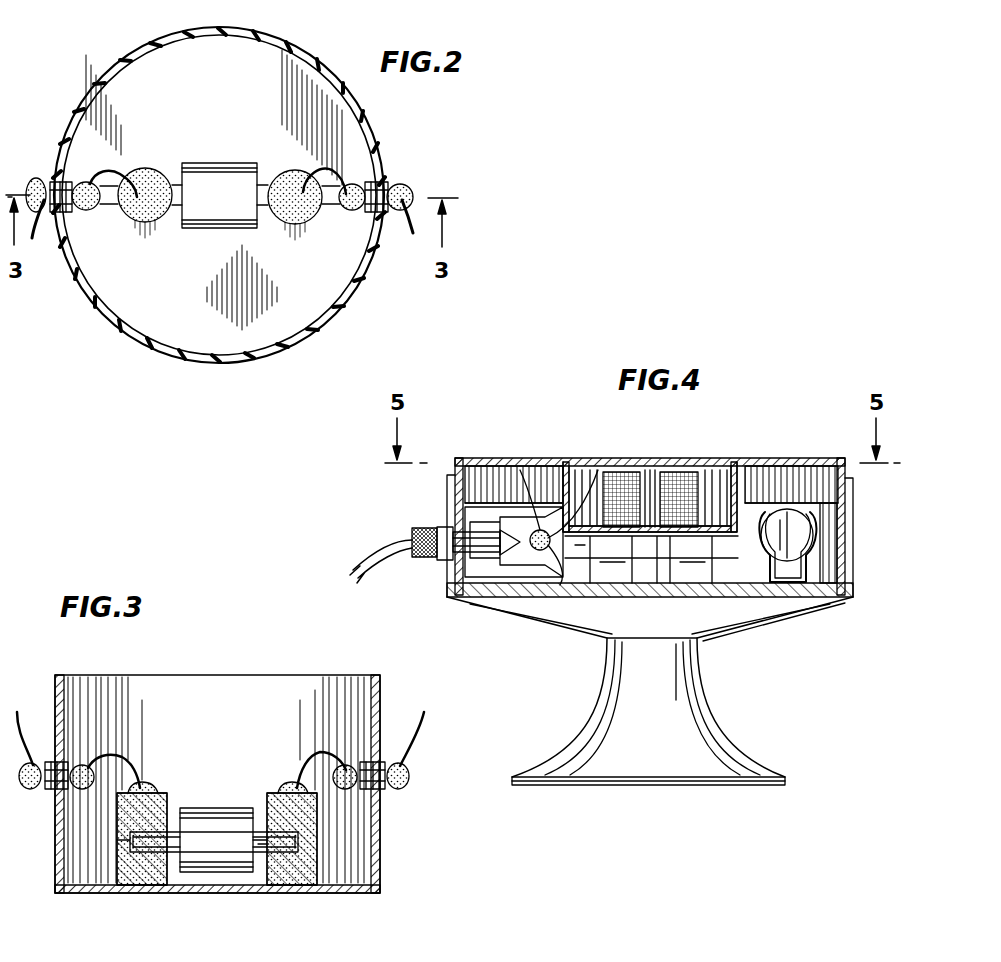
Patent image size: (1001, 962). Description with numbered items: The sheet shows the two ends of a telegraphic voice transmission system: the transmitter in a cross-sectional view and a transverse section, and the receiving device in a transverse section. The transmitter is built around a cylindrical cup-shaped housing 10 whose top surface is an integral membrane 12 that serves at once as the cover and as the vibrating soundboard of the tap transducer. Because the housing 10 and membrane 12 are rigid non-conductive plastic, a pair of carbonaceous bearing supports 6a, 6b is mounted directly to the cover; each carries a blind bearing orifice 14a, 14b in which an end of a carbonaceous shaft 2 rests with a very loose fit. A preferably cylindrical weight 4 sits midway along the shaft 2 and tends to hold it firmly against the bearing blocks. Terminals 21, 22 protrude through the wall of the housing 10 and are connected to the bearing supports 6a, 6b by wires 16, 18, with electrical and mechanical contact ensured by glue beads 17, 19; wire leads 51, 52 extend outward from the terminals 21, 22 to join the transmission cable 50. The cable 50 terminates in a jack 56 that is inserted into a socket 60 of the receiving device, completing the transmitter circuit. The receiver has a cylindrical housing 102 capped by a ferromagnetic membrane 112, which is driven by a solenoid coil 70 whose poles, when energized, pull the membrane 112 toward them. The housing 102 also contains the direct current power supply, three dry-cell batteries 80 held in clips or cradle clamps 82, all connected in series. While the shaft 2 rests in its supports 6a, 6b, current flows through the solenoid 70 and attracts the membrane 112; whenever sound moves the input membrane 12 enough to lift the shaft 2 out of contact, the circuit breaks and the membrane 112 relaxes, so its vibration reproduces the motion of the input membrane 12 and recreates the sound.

In FIG. 2, the shaft 2 is at (263, 186).
In FIG. 3, the shaft 2 is at (174, 830).
In FIG. 2, the weight 4 is at (214, 172).
In FIG. 3, the weight 4 is at (213, 822).
In FIG. 2, the bearing support 6a is at (302, 177).
In FIG. 3, the bearing support 6a is at (317, 810).
In FIG. 2, the bearing support 6b is at (153, 174).
In FIG. 3, the bearing support 6b is at (117, 827).
In FIG. 2, the housing 10 is at (326, 318).
In FIG. 3, the housing 10 is at (380, 686).
In FIG. 2, the membrane 12 is at (181, 306).
In FIG. 3, the membrane 12 is at (370, 884).
In FIG. 3, the blind bearing orifice 14a is at (266, 842).
In FIG. 3, the blind bearing orifice 14b is at (132, 846).
In FIG. 2, the wire 16 is at (328, 180).
In FIG. 3, the wire 16 is at (331, 757).
In FIG. 3, the glue bead 17 is at (284, 782).
In FIG. 2, the wire 18 is at (110, 180).
In FIG. 3, the wire 18 is at (116, 757).
In FIG. 3, the glue bead 19 is at (172, 833).
In FIG. 2, the terminal 21 is at (387, 183).
In FIG. 3, the terminal 21 is at (385, 786).
In FIG. 2, the terminal 22 is at (50, 182).
In FIG. 3, the terminal 22 is at (33, 762).
In FIG. 4, the transmission cable 50 is at (404, 562).
In FIG. 2, the first external lead 51 is at (408, 232).
In FIG. 3, the first external lead 51 is at (427, 717).
In FIG. 2, the second external lead 52 is at (35, 244).
In FIG. 3, the second external lead 52 is at (17, 712).
In FIG. 4, the jack 56 is at (460, 534).
In FIG. 4, the socket 60 is at (510, 507).
In FIG. 4, the solenoid coil 70 is at (682, 473).
In FIG. 4, the dry-cell battery 80 is at (785, 530).
In FIG. 4, the clip 82 is at (810, 593).
In FIG. 4, the housing 102 is at (700, 640).
In FIG. 4, the membrane 112 is at (542, 466).